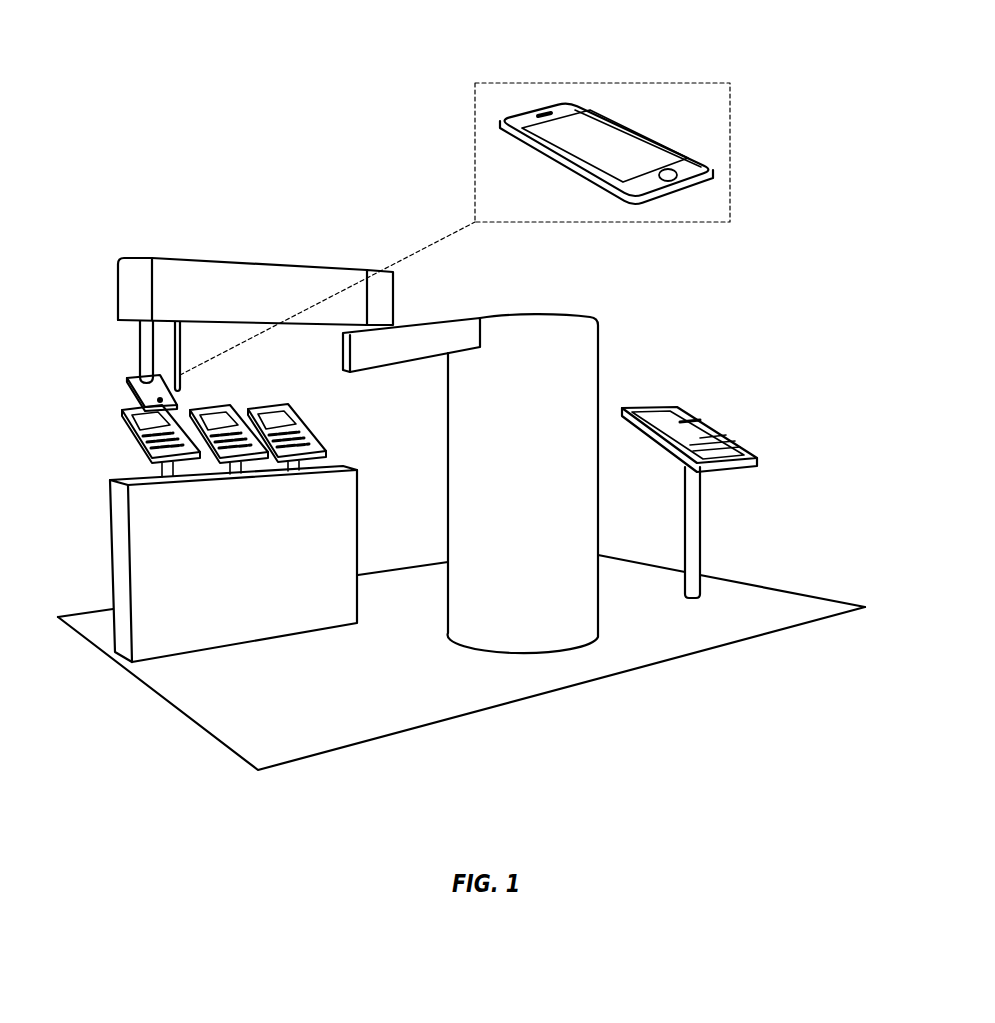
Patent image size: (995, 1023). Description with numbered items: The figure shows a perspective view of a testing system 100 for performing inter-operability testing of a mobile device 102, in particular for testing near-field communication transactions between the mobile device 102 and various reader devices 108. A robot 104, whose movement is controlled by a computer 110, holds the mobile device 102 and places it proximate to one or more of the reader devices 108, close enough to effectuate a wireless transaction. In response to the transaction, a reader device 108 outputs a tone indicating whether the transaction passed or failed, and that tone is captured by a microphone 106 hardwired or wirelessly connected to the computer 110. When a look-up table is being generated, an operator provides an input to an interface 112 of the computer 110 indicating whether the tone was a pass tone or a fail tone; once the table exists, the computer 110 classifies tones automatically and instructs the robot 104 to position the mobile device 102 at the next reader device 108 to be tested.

The testing system 100 is at (210, 66).
The mobile device 102 is at (542, 104).
The robot 104 is at (285, 264).
The microphone 106 is at (183, 337).
The reader devices 108 is at (290, 470).
The computer 110 is at (698, 465).
The interface 112 is at (707, 431).